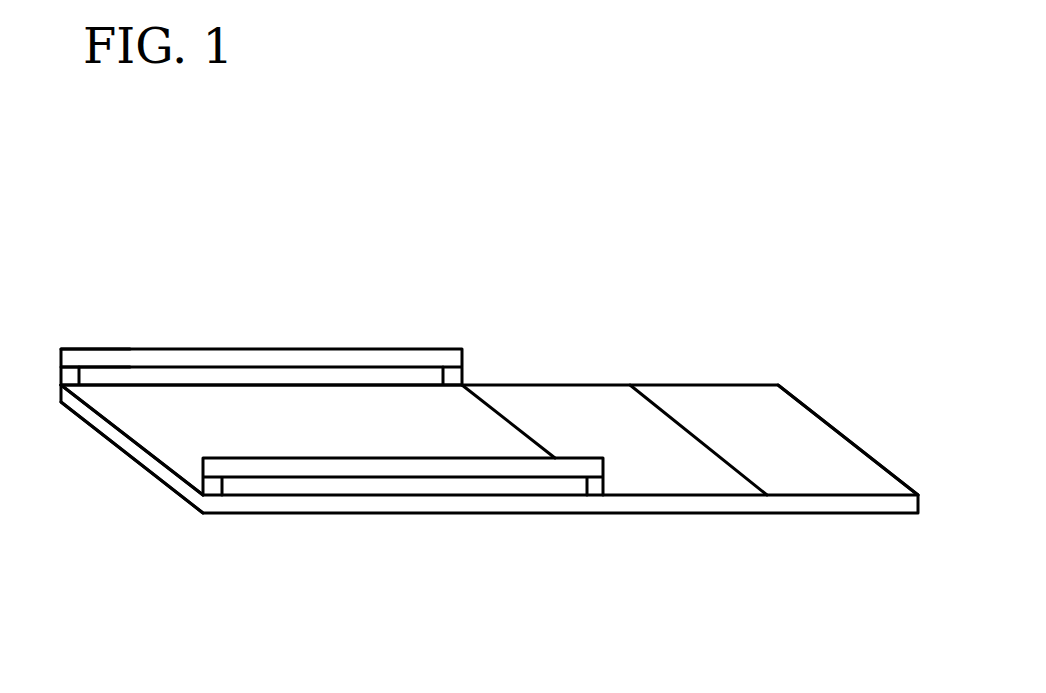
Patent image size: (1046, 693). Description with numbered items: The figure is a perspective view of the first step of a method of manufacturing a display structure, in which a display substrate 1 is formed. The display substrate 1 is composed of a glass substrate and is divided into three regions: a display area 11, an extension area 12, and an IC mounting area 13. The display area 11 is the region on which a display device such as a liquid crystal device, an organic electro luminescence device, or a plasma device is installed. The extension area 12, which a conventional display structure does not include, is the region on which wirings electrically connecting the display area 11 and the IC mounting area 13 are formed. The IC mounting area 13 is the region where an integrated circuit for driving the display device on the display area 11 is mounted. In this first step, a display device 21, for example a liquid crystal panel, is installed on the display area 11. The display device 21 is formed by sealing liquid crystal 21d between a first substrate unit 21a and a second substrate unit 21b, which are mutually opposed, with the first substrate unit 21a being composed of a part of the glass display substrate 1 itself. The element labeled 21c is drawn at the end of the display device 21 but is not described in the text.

The display substrate 1 is at (483, 217).
The display area 11 is at (605, 535).
The extension area 12 is at (770, 535).
The IC mounting area 13 is at (918, 535).
The display device 21 is at (206, 350).
The first substrate unit 21a is at (168, 483).
The second substrate unit 21b is at (152, 455).
The electrode end portion 21c is at (72, 350).
The liquid crystal 21d is at (274, 377).